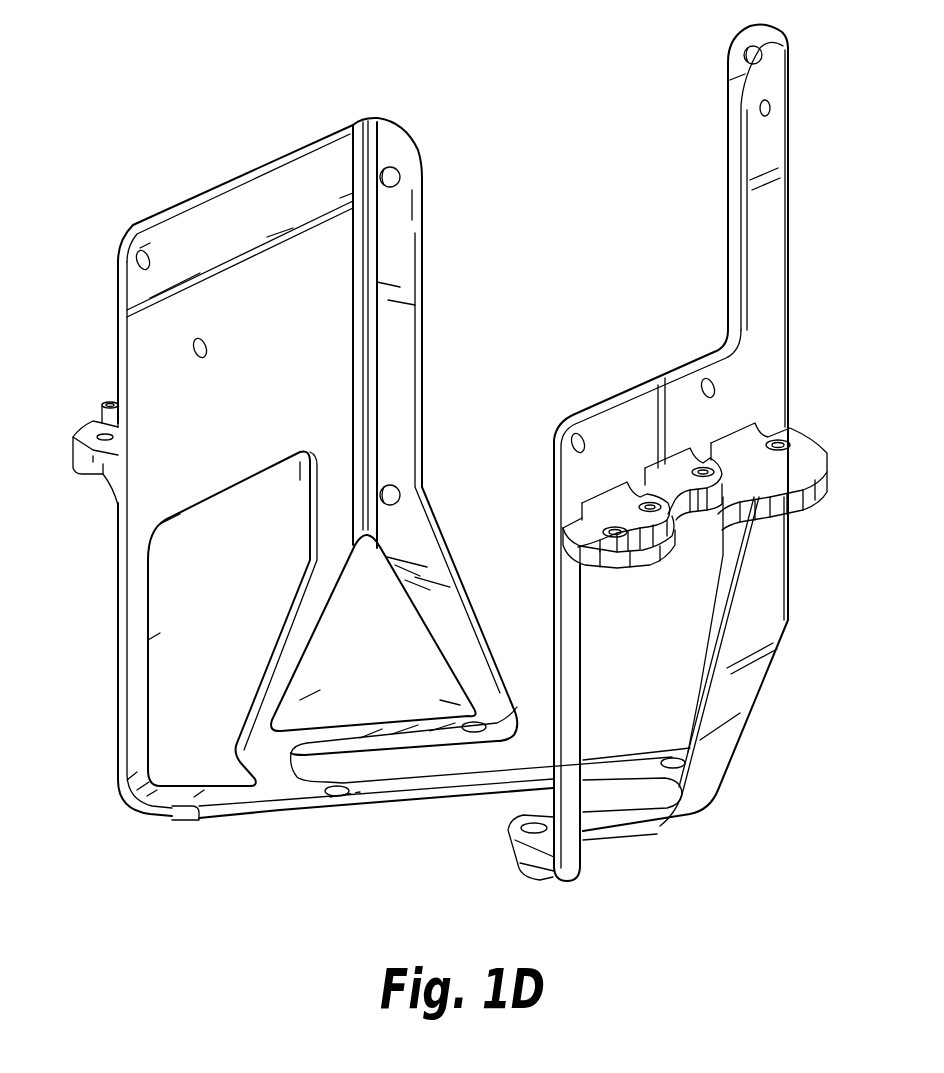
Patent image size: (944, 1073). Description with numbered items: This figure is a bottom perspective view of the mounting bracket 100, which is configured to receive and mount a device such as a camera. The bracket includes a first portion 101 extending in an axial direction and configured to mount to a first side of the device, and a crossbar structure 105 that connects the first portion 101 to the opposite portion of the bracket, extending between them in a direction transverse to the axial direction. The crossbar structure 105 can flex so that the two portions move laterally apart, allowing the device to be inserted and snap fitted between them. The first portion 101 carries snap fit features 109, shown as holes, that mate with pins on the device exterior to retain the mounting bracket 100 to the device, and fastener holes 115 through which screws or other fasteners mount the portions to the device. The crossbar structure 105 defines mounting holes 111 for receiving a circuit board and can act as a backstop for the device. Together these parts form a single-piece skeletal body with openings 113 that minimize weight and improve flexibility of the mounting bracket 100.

The mounting bracket 100 is at (592, 85).
The first portion 101 is at (545, 503).
The crossbar structure 105 is at (388, 849).
The snap fit features 109 is at (148, 254).
The mounting holes 111 is at (340, 787).
The openings 113 is at (343, 630).
The fastener holes 115 is at (403, 171).